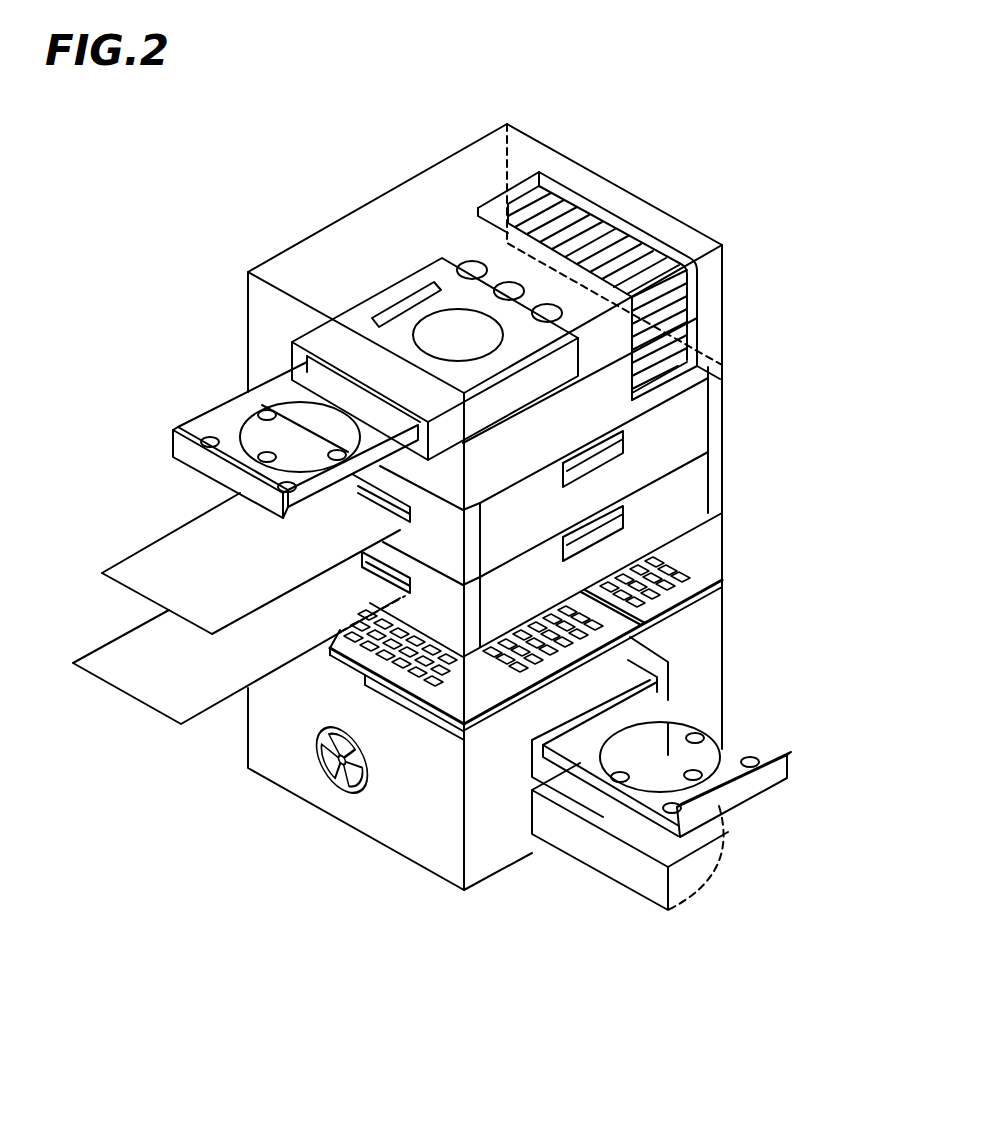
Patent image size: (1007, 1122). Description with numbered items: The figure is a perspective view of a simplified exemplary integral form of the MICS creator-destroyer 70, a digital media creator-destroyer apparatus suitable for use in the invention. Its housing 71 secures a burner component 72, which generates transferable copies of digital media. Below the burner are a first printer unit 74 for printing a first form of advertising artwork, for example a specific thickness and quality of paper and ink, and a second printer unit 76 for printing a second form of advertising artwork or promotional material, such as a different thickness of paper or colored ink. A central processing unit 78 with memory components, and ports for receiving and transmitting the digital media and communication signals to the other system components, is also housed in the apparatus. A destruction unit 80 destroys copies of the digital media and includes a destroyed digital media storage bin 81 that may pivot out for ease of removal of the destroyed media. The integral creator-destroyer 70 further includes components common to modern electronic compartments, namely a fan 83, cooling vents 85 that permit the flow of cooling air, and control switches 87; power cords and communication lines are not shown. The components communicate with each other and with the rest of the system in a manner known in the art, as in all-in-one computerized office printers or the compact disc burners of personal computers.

The integral MICS creator-destroyer 70 is at (785, 212).
The housing 71 is at (478, 165).
The burner component 72 is at (395, 327).
The first printer unit 74 is at (358, 508).
The second printer unit 76 is at (183, 651).
The central processing unit 78 is at (712, 546).
The destruction unit 80 is at (765, 722).
The destroyed digital media storage bin 81 is at (617, 868).
The fan 83 is at (333, 776).
The cooling vents 85 is at (583, 222).
The control switches 87 is at (547, 305).